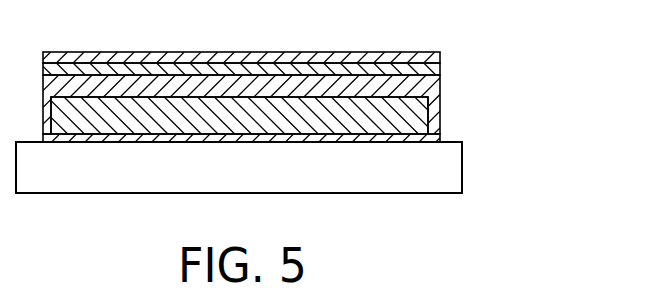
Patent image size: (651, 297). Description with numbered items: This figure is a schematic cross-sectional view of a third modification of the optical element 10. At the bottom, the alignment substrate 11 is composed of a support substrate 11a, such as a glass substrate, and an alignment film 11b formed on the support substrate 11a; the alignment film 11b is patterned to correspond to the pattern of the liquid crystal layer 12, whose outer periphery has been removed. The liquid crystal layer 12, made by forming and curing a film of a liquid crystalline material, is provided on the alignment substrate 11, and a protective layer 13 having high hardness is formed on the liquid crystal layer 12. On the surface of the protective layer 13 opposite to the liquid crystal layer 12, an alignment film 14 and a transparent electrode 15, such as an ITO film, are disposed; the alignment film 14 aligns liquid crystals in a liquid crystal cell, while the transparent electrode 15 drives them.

The optical element 10 is at (523, 67).
The alignment substrate 11 is at (541, 125).
The support substrate 11a is at (452, 176).
The alignment film 11b is at (437, 140).
The liquid crystal layer 12 is at (430, 108).
The protective layer 13 is at (440, 83).
The alignment film 14 is at (422, 54).
The transparent electrode 15 is at (440, 70).